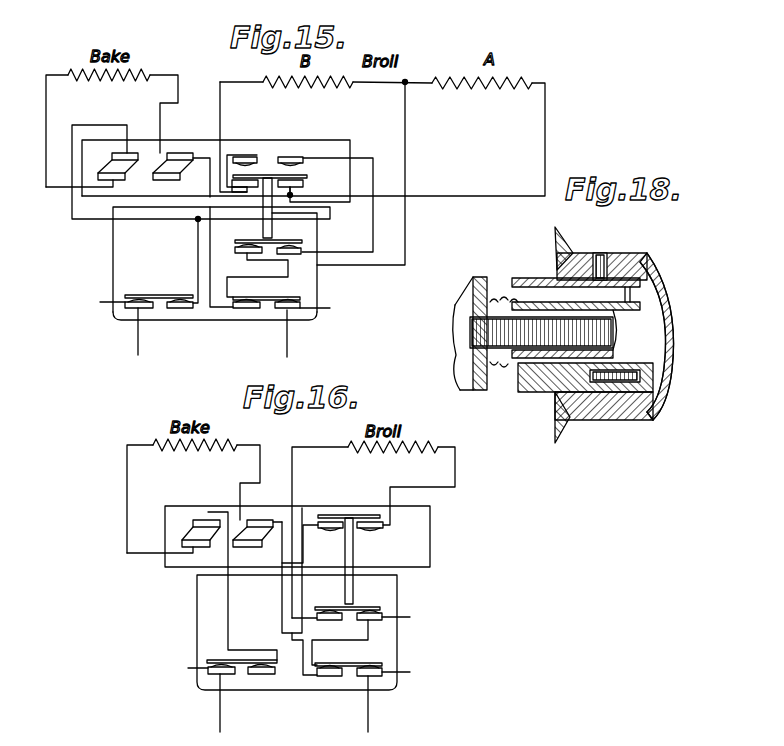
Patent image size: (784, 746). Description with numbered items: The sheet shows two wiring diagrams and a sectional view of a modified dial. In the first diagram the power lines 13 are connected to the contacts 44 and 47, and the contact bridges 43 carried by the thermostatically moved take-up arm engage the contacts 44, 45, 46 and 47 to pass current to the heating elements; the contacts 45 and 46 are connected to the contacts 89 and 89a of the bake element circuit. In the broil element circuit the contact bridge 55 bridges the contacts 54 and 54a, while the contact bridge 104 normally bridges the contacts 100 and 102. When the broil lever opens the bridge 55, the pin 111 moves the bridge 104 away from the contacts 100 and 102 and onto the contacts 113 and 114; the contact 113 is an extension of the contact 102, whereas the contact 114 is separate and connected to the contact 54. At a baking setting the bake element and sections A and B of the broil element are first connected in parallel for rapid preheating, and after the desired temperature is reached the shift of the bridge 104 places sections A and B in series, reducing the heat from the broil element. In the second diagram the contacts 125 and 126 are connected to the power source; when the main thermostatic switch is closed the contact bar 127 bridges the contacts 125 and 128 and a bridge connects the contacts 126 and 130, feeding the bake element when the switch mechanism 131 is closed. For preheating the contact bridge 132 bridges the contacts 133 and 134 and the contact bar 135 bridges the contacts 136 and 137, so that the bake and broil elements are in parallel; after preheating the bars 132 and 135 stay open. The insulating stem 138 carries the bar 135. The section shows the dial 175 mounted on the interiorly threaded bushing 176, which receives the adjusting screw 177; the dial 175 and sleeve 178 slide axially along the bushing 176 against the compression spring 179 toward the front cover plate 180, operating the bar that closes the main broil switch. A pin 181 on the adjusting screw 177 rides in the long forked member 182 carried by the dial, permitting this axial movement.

In FIG. 15, the contact 89 is at (132, 153).
In FIG. 15, the contact 89a is at (177, 153).
In FIG. 15, the contact 113 is at (238, 157).
In FIG. 15, the contact 114 is at (293, 157).
In FIG. 15, the contact 100 is at (312, 180).
In FIG. 15, the contact bridge 104 is at (261, 176).
In FIG. 15, the contact 102 is at (257, 188).
In FIG. 15, the pin 111 is at (267, 213).
In FIG. 15, the contact bridge 55 is at (283, 247).
In FIG. 15, the contact 54 is at (301, 250).
In FIG. 15, the contact 54a is at (250, 271).
In FIG. 15, the contact bridges 43 is at (160, 295).
In FIG. 15, the contact 44 is at (111, 304).
In FIG. 15, the contact 45 is at (173, 310).
In FIG. 15, the contact 46 is at (243, 309).
In FIG. 15, the contact 47 is at (315, 309).
In FIG. 15, the power lines 13 is at (138, 335).
In FIG. 16, the switch mechanism 131 is at (218, 535).
In FIG. 16, the contact bar 135 is at (346, 515).
In FIG. 16, the contact 136 is at (378, 528).
In FIG. 16, the contact 137 is at (325, 536).
In FIG. 16, the insulating stem 138 is at (355, 549).
In FIG. 16, the contact bridge 132 is at (368, 599).
In FIG. 16, the contact 133 is at (379, 638).
In FIG. 16, the contact 134 is at (327, 626).
In FIG. 16, the contact bar 127 is at (258, 641).
In FIG. 16, the contact 125 is at (189, 671).
In FIG. 16, the contact 128 is at (262, 676).
In FIG. 16, the contact 130 is at (327, 677).
In FIG. 16, the contact 126 is at (401, 699).
In FIG. 18, the dial 175 is at (613, 253).
In FIG. 18, the bushing 176 is at (500, 367).
In FIG. 18, the adjusting screw 177 is at (583, 420).
In FIG. 18, the sleeve 178 is at (542, 392).
In FIG. 18, the compression spring 179 is at (497, 302).
In FIG. 18, the front cover plate 180 is at (485, 385).
In FIG. 18, the pin 181 is at (622, 418).
In FIG. 18, the forked member 182 is at (647, 267).